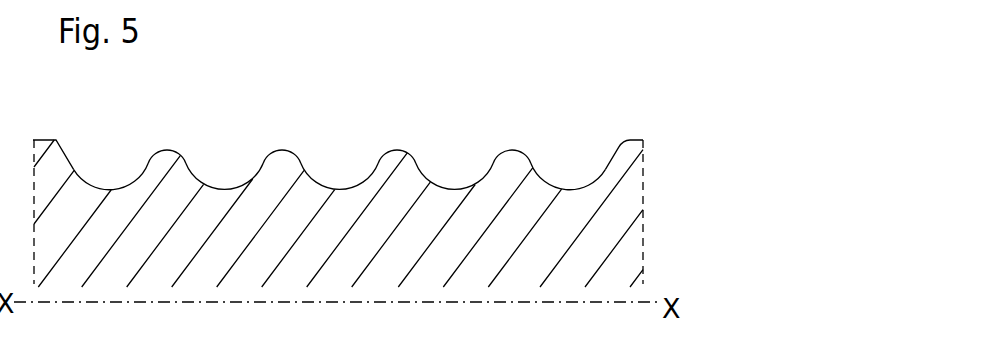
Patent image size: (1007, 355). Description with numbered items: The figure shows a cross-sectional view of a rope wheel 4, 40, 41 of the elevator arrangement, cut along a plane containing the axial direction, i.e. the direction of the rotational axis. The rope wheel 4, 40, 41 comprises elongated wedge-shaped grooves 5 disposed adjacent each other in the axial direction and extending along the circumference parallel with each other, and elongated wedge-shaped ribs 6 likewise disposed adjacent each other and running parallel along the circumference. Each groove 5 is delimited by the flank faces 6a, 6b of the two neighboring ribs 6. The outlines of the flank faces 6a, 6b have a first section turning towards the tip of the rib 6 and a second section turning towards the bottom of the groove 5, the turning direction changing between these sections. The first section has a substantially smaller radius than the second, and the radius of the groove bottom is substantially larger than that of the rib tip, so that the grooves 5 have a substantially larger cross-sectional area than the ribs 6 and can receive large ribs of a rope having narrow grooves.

The rope wheel 4 is at (635, 103).
The rope wheel 40 is at (338, 194).
The rope wheel 41 is at (338, 194).
The wedge-shaped groove 5 is at (116, 161).
The wedge-shaped rib 6 is at (61, 194).
The flank face 6a is at (72, 160).
The flank face 6b is at (150, 162).